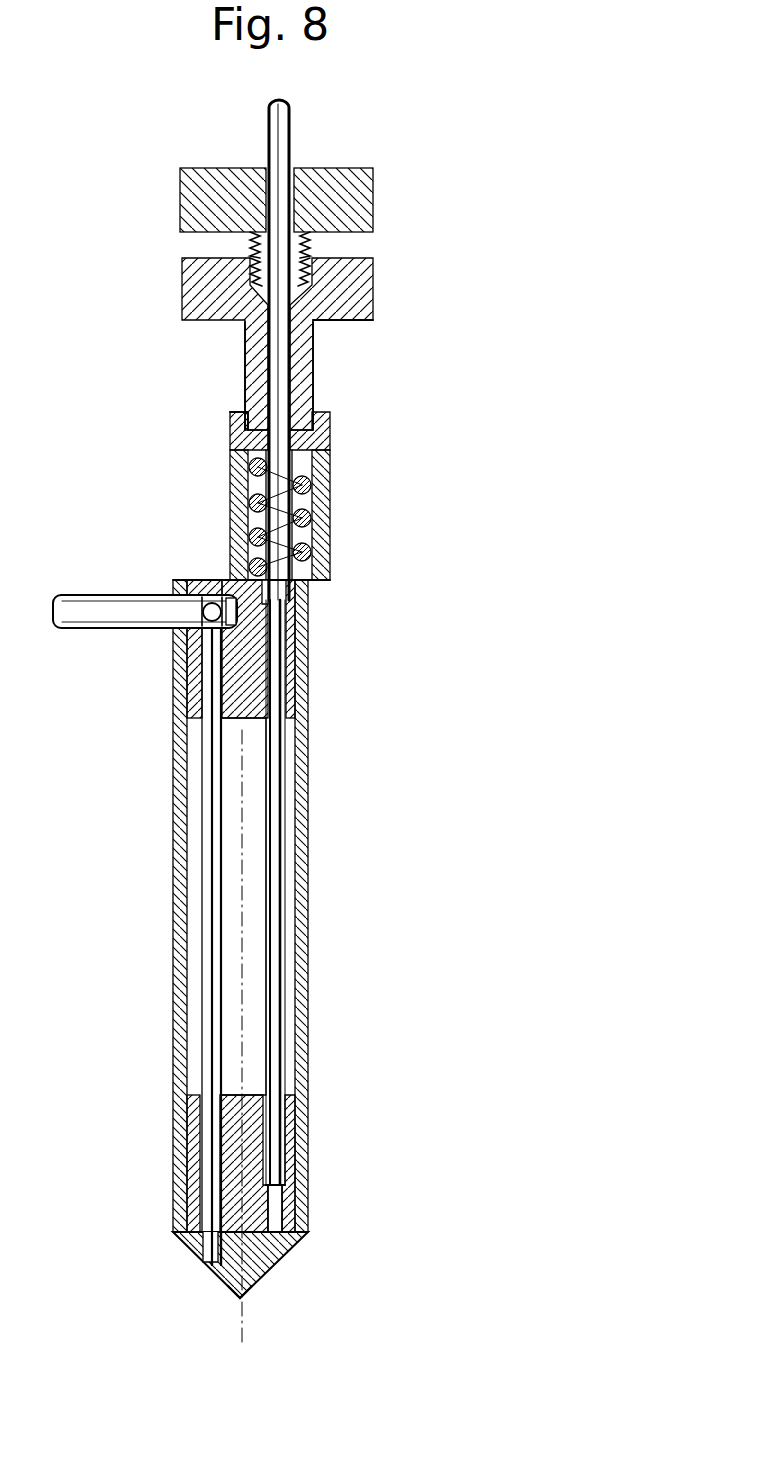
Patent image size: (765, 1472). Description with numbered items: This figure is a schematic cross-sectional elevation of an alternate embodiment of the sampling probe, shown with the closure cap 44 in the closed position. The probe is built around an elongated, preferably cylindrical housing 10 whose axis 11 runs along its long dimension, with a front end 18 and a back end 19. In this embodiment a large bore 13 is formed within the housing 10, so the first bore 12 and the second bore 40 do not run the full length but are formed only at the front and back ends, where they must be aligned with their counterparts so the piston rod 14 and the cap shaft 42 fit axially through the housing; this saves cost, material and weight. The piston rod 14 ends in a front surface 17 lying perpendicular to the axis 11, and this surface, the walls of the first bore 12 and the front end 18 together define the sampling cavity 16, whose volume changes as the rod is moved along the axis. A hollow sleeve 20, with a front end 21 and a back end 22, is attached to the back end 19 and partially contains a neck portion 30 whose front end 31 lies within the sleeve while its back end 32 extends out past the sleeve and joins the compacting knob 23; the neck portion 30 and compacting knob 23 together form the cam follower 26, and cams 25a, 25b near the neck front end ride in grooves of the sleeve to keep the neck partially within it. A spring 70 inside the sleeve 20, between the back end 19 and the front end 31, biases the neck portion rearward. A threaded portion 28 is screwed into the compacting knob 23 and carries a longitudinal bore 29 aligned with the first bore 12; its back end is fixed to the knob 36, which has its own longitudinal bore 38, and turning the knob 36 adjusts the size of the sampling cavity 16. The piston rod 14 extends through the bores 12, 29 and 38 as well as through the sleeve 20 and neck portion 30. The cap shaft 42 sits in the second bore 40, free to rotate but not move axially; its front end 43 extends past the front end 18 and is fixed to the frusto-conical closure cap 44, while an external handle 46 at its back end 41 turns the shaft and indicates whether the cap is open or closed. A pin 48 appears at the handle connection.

The housing 10 is at (310, 812).
The axis 11 is at (242, 848).
The first bore 12 is at (308, 675).
The large bore 13 is at (248, 985).
The piston rod 14 is at (273, 1040).
The sampling cavity 16 is at (278, 1200).
The front surface 17 is at (282, 1195).
The front end 18 is at (287, 1257).
The back end 19 is at (268, 600).
The sleeve 20 is at (330, 497).
The front end 21 is at (330, 582).
The back end 22 is at (247, 412).
The compacting knob 23 is at (373, 285).
The cam 25a is at (330, 440).
The cam 25b is at (230, 448).
The cam follower 26 is at (228, 335).
The threaded portion 28 is at (252, 242).
The longitudinal bore 29 is at (253, 278).
The neck portion 30 is at (313, 365).
The front end 31 is at (330, 472).
The back end 32 is at (318, 323).
The knob 36 is at (373, 195).
The longitudinal bore 38 is at (298, 178).
The second bore 40 is at (193, 690).
The back end 41 is at (214, 598).
The cap shaft 42 is at (207, 948).
The front end 43 is at (205, 1262).
The closure cap 44 is at (267, 1273).
The external handle 46 is at (148, 610).
The pin 48 is at (205, 608).
The spring 70 is at (330, 522).